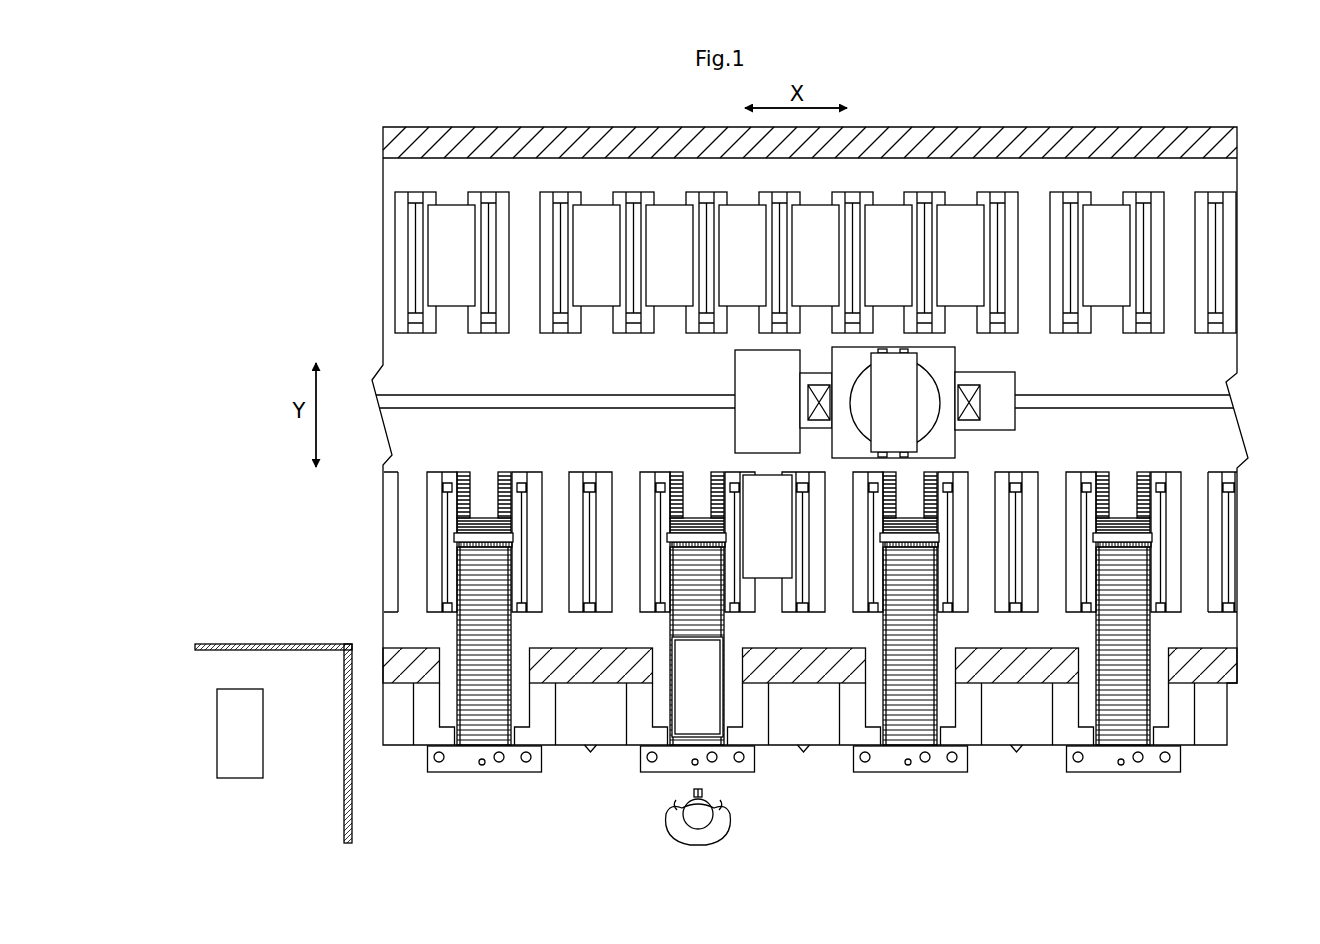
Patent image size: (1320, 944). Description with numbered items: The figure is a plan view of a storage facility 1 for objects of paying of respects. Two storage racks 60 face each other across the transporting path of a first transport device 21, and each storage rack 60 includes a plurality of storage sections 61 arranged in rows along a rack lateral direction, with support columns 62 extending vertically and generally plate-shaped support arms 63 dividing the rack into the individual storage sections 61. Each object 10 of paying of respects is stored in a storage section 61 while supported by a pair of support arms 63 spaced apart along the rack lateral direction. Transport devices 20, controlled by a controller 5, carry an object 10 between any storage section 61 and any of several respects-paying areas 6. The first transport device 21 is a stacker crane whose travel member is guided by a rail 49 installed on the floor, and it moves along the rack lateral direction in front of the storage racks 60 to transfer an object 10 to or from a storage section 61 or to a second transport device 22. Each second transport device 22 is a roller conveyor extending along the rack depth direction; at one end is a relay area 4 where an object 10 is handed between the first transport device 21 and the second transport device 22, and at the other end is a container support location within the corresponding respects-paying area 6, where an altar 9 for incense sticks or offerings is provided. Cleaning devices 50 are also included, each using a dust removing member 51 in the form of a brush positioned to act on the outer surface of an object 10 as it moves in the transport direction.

The storage facility 1 is at (1230, 110).
The relay area 4 is at (805, 546).
The controller 5 is at (263, 753).
The respects-paying area 6 is at (728, 784).
The altar 9 is at (641, 752).
The object of paying of respects 10 is at (1105, 205).
The transport devices 20 is at (804, 558).
The first transport device 21 is at (1026, 418).
The second transport device 22 is at (727, 642).
The rail 49 is at (1075, 392).
The cleaning device 50 is at (844, 480).
The dust removing member 51 is at (668, 542).
The storage rack 60 is at (778, 353).
The storage section 61 is at (522, 192).
The support column 62 is at (705, 190).
The support arm 63 is at (547, 329).